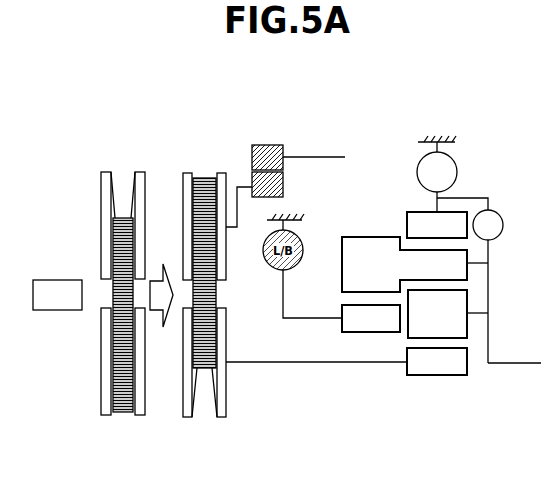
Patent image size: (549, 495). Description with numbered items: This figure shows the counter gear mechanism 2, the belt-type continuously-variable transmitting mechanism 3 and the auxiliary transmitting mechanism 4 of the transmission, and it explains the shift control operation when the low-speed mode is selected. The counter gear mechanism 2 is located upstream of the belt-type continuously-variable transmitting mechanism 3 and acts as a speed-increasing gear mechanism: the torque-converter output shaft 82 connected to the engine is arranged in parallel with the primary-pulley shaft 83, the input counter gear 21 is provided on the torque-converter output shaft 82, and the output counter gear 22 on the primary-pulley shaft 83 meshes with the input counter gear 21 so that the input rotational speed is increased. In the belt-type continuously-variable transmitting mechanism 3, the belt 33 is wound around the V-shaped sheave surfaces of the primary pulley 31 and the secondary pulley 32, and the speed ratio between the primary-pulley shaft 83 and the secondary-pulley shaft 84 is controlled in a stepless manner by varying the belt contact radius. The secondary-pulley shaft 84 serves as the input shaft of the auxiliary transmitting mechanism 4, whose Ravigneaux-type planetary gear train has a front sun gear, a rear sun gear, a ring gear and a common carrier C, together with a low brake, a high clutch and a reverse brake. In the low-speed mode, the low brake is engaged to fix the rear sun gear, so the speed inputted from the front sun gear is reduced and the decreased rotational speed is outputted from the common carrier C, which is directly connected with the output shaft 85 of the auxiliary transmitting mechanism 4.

The counter gear mechanism 2 is at (241, 116).
The input counter gear 21 is at (267, 144).
The output counter gear 22 is at (250, 176).
The belt-type continuously-variable transmitting mechanism 3 is at (84, 226).
The primary pulley 31 is at (97, 178).
The secondary pulley 32 is at (100, 388).
The belt 33 is at (104, 294).
The auxiliary transmitting mechanism 4 is at (389, 198).
The torque-converter output shaft 82 is at (338, 159).
The primary-pulley shaft 83 is at (238, 229).
The secondary-pulley shaft 84 is at (293, 365).
The output shaft 85 is at (511, 366).
The common carrier C is at (488, 284).